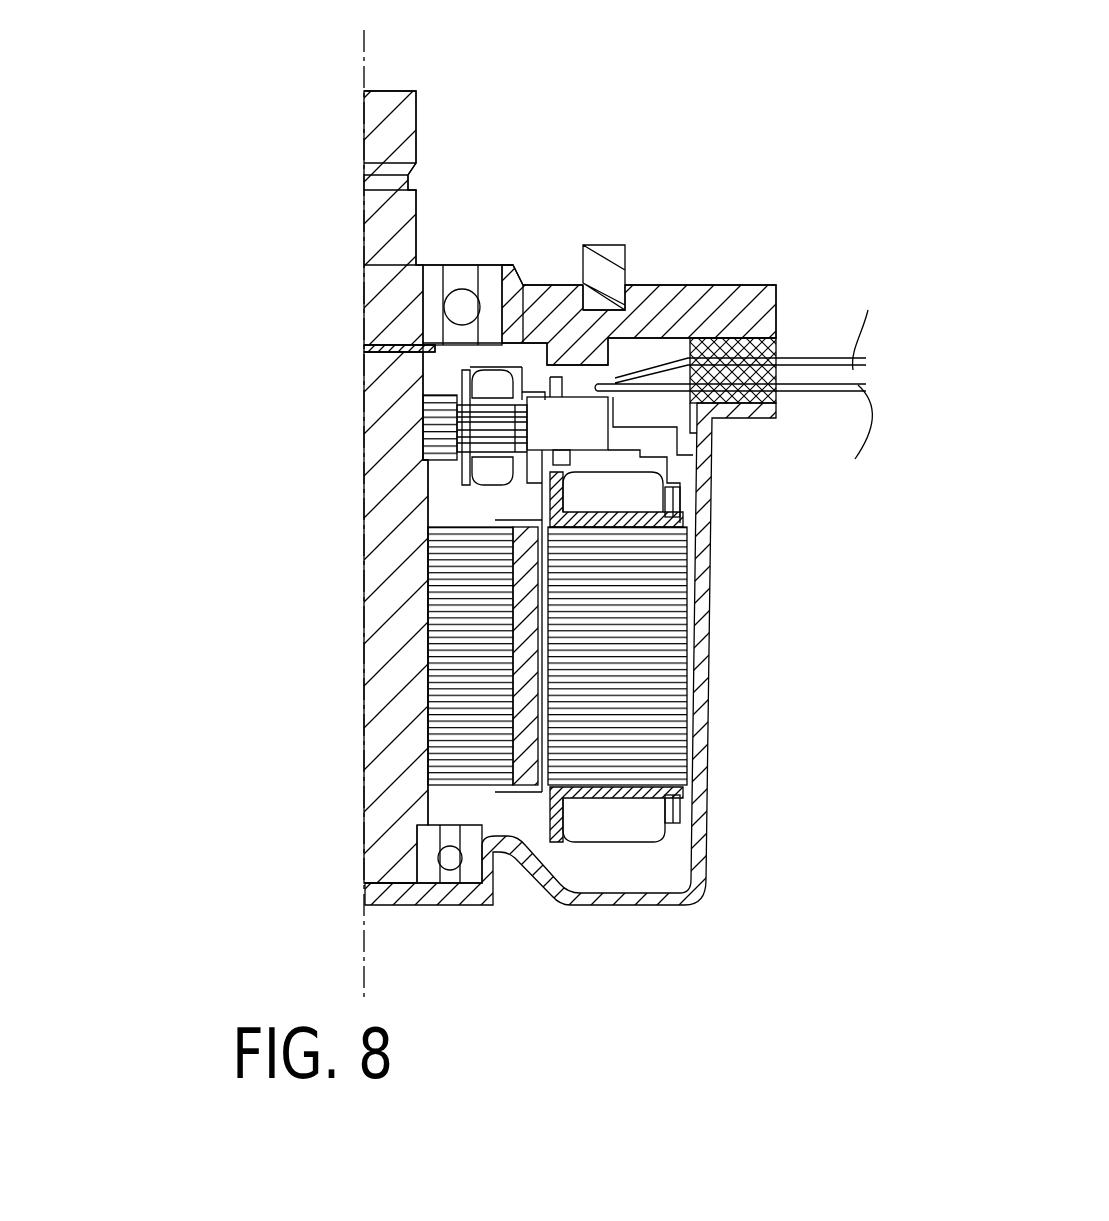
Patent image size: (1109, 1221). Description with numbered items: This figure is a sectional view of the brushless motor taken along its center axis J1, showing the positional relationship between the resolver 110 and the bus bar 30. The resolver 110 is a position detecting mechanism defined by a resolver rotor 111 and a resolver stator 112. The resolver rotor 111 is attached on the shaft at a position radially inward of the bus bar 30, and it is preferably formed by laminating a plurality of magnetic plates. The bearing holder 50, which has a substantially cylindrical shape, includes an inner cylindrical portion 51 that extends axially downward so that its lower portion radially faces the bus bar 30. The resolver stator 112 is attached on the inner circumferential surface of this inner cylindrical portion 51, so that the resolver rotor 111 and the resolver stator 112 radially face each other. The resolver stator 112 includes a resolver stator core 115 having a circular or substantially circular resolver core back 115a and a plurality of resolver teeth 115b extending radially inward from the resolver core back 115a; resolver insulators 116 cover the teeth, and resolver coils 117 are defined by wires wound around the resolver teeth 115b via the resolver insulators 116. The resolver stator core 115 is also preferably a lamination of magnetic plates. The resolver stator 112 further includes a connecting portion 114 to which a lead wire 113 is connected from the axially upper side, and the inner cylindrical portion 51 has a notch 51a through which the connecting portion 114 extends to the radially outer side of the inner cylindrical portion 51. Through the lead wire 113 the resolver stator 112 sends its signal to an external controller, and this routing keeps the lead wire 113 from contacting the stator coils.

The central axis J1 is at (365, 62).
The resolver 110 is at (437, 375).
The resolver stator 112 is at (460, 387).
The resolver rotor 111 is at (437, 430).
The resolver stator core 115 is at (522, 450).
The resolver core back 115a is at (522, 440).
The resolver teeth 115b is at (485, 428).
The resolver insulators 116 is at (495, 378).
The resolver coils 117 is at (535, 380).
The inner cylindrical portion 51 is at (533, 353).
The notch 51a is at (538, 470).
The bearing holder 50 is at (627, 257).
The connecting portion 114 is at (570, 413).
The bus bar 30 is at (628, 410).
The lead wire 113 is at (818, 393).